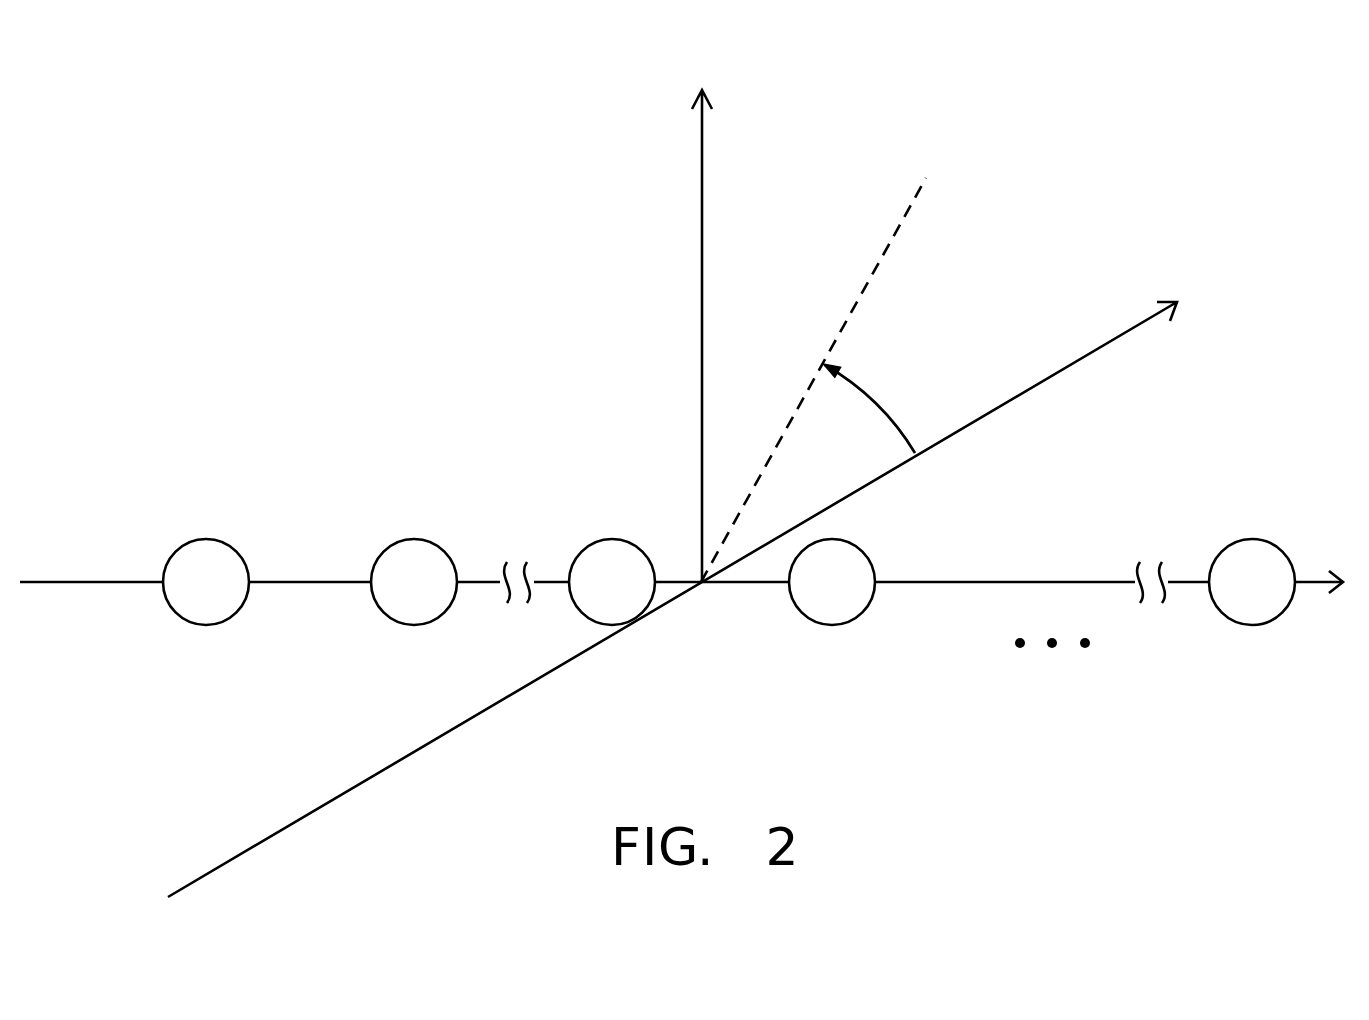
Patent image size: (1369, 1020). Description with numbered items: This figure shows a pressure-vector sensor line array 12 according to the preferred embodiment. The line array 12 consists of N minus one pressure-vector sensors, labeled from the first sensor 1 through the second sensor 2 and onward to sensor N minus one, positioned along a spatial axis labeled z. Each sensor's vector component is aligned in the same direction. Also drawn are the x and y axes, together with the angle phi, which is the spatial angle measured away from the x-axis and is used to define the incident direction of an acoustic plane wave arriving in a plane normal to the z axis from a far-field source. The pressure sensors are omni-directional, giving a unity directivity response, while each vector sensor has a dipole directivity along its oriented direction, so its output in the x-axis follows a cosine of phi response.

The line array 12 is at (694, 474).
The first photovoltaic cell PV1 1 is at (206, 603).
The second photovoltaic cell PV2 2 is at (414, 603).